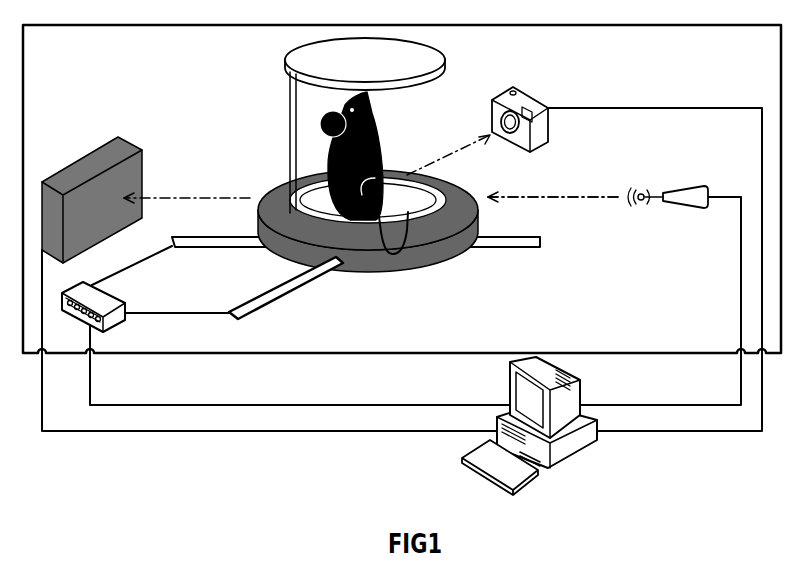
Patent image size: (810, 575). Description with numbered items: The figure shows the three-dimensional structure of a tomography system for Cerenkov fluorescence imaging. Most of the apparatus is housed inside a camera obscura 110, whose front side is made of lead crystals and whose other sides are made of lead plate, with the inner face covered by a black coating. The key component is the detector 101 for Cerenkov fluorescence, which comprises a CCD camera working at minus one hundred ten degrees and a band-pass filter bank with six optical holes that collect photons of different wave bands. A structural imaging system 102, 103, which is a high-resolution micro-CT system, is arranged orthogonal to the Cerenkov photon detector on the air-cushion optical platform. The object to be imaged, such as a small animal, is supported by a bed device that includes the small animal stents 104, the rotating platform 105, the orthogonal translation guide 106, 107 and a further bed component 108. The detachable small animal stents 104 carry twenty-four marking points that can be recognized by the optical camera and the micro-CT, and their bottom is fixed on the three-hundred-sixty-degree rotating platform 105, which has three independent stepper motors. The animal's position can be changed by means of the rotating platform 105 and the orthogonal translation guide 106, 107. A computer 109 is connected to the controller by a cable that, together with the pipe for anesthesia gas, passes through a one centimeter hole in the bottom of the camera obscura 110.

The detector for Cerenkov fluorescence 101 is at (563, 119).
The structural imaging system 102 is at (604, 217).
The structural imaging system 103 is at (146, 200).
The small animal stents 104 is at (365, 125).
The rotating platform 105 is at (430, 262).
The orthogonal translation guide 106 is at (353, 265).
The orthogonal translation guide 107 is at (286, 303).
The bed device 108 is at (129, 315).
The computer 109 is at (570, 426).
The camera obscura 110 is at (402, 189).